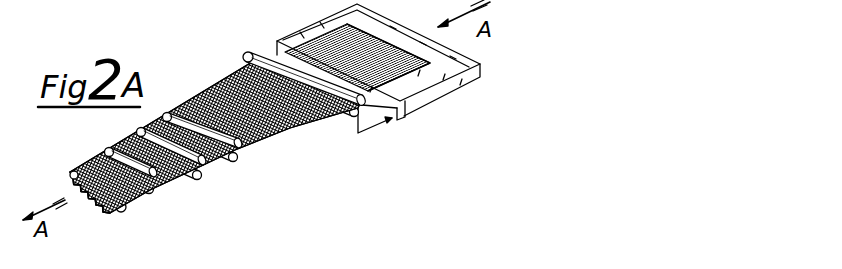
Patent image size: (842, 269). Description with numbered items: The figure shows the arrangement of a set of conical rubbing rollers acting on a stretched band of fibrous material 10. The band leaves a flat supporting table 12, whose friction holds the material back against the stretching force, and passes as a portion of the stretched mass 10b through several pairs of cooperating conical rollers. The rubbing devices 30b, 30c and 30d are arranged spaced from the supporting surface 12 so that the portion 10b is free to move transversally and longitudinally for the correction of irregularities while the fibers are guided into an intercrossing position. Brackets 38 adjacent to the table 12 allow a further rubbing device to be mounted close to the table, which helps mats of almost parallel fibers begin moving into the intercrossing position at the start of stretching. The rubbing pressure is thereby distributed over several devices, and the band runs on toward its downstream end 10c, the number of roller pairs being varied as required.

The stretched mass 10 is at (360, 43).
The portion of the stretched mass 10b is at (215, 102).
The belt discharge end 10c is at (73, 190).
The supporting surface 12 is at (470, 80).
The rubbing device 30b is at (220, 160).
The rubbing device 30c is at (181, 178).
The rubbing device 30d is at (139, 193).
The brackets 38 is at (376, 126).